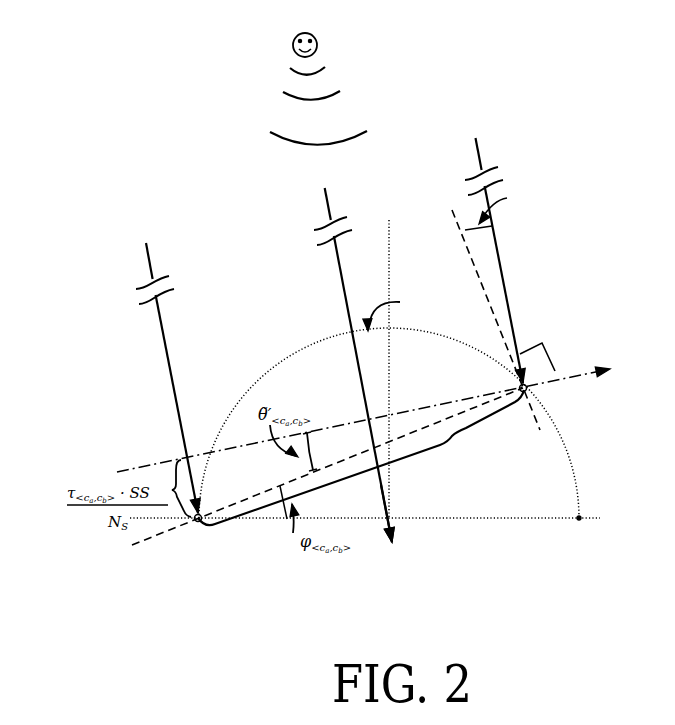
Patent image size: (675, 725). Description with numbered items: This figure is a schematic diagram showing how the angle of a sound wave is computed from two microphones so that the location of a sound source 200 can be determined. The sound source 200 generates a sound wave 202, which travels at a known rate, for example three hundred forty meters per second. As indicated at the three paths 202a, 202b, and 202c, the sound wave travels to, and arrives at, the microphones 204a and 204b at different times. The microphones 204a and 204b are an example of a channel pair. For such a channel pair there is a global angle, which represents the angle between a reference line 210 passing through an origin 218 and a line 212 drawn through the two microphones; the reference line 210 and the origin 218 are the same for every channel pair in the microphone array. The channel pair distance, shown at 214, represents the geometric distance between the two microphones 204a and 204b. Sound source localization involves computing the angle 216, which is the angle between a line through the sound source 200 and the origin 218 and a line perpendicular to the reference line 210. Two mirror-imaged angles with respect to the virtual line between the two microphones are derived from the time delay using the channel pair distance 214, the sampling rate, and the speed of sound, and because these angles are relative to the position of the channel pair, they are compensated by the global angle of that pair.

The sound source 200 is at (456, 48).
The sound wave 202 is at (365, 163).
The sound wave path 202a is at (163, 320).
The sound wave path 202b is at (500, 260).
The sound wave path 202c is at (340, 258).
The microphone 204a is at (215, 552).
The microphone 204b is at (580, 396).
The reference line 210 is at (588, 519).
The line through the two microphones 212 is at (570, 365).
The channel pair distance 214 is at (467, 448).
The angle 216 is at (397, 290).
The origin 218 is at (393, 512).